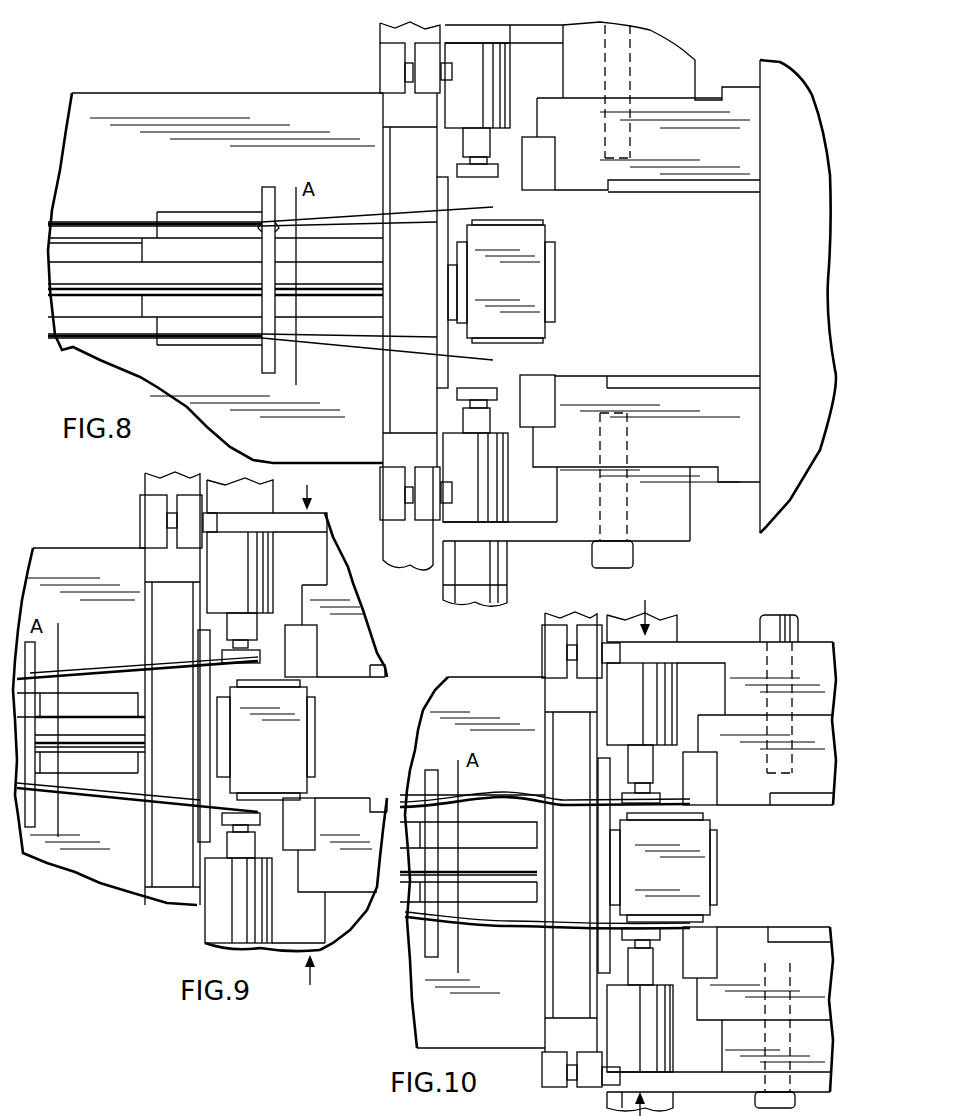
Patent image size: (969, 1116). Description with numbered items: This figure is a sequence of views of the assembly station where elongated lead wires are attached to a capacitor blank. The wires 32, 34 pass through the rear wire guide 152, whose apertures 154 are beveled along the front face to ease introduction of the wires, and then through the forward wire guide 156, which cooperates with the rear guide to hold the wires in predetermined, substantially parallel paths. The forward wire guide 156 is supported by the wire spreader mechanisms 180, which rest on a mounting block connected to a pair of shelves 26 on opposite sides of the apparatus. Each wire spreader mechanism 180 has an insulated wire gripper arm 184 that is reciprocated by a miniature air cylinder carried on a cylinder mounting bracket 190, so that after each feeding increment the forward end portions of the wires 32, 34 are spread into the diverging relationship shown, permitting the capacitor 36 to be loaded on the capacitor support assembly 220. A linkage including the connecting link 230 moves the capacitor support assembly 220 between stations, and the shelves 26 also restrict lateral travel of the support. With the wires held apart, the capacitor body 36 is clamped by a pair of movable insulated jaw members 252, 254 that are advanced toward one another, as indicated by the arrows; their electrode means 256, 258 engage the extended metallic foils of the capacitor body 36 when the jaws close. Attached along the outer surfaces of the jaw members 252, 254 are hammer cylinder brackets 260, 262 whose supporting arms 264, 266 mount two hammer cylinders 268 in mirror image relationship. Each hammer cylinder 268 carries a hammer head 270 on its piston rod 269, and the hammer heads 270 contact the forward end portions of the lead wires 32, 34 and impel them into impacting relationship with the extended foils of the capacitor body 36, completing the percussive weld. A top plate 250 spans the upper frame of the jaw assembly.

In FIG. 8, the shelves 26 is at (196, 212).
In FIG. 9, the shelves 26 is at (81, 733).
In FIG. 10, the shelves 26 is at (472, 848).
In FIG. 8, the wire 32 is at (110, 222).
In FIG. 9, the wire 32 is at (107, 670).
In FIG. 10, the wire 32 is at (503, 795).
In FIG. 8, the wire 34 is at (112, 338).
In FIG. 9, the wire 34 is at (105, 800).
In FIG. 10, the wire 34 is at (510, 930).
In FIG. 8, the capacitor 36 is at (537, 318).
In FIG. 8, the rear wire guide 152 is at (270, 187).
In FIG. 9, the rear wire guide 152 is at (40, 737).
In FIG. 10, the rear wire guide 152 is at (430, 770).
In FIG. 8, the apertures 154 is at (258, 222).
In FIG. 8, the forward wire guide 156 is at (440, 200).
In FIG. 9, the forward wire guide 156 is at (203, 750).
In FIG. 10, the forward wire guide 156 is at (602, 782).
In FIG. 8, the wire spreader mechanism 180 is at (372, 60).
In FIG. 9, the wire spreader mechanism 180 is at (178, 521).
In FIG. 10, the wire spreader mechanism 180 is at (581, 651).
In FIG. 8, the wire gripper arm 184 is at (383, 204).
In FIG. 9, the wire gripper arm 184 is at (150, 632).
In FIG. 10, the wire gripper arm 184 is at (545, 760).
In FIG. 8, the cylinder mounting bracket 190 is at (382, 491).
In FIG. 10, the cylinder mounting bracket 190 is at (581, 1069).
In FIG. 8, the capacitor support assembly 220 is at (558, 272).
In FIG. 9, the capacitor support assembly 220 is at (266, 740).
In FIG. 10, the capacitor support assembly 220 is at (663, 867).
In FIG. 8, the connecting link 230 is at (88, 292).
In FIG. 9, the connecting link 230 is at (90, 743).
In FIG. 10, the connecting link 230 is at (468, 877).
In FIG. 8, the top plate 250 is at (546, 40).
In FIG. 9, the top plate 250 is at (267, 531).
In FIG. 10, the top plate 250 is at (720, 664).
In FIG. 8, the insulated jaw member 252 is at (710, 104).
In FIG. 9, the insulated jaw member 252 is at (360, 641).
In FIG. 10, the insulated jaw member 252 is at (742, 725).
In FIG. 8, the insulated jaw member 254 is at (748, 444).
In FIG. 9, the insulated jaw member 254 is at (340, 884).
In FIG. 10, the insulated jaw member 254 is at (752, 950).
In FIG. 8, the electrode means 256 is at (545, 180).
In FIG. 9, the electrode means 256 is at (312, 668).
In FIG. 10, the electrode means 256 is at (700, 778).
In FIG. 8, the electrode means 258 is at (545, 380).
In FIG. 9, the electrode means 258 is at (307, 808).
In FIG. 10, the electrode means 258 is at (702, 940).
In FIG. 8, the hammer cylinder bracket 260 is at (665, 50).
In FIG. 8, the hammer cylinder bracket 262 is at (672, 541).
In FIG. 8, the supporting arm 264 is at (520, 48).
In FIG. 8, the supporting arm 266 is at (532, 538).
In FIG. 10, the supporting arm 266 is at (718, 1091).
In FIG. 8, the hammer cylinder 268 is at (493, 88).
In FIG. 9, the hammer cylinder 268 is at (258, 553).
In FIG. 10, the hammer cylinder 268 is at (642, 867).
In FIG. 8, the piston rod 269 is at (490, 137).
In FIG. 9, the piston rod 269 is at (262, 622).
In FIG. 10, the piston rod 269 is at (640, 865).
In FIG. 8, the hammer head 270 is at (486, 177).
In FIG. 9, the hammer head 270 is at (252, 663).
In FIG. 10, the hammer head 270 is at (670, 790).